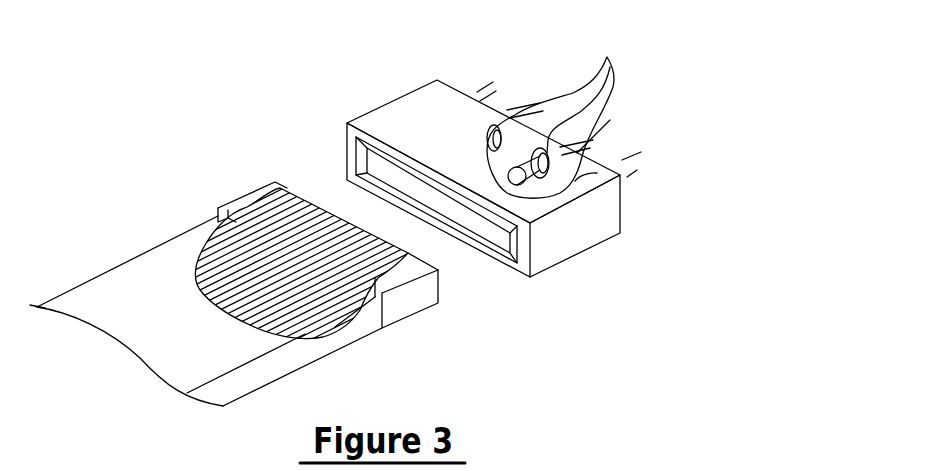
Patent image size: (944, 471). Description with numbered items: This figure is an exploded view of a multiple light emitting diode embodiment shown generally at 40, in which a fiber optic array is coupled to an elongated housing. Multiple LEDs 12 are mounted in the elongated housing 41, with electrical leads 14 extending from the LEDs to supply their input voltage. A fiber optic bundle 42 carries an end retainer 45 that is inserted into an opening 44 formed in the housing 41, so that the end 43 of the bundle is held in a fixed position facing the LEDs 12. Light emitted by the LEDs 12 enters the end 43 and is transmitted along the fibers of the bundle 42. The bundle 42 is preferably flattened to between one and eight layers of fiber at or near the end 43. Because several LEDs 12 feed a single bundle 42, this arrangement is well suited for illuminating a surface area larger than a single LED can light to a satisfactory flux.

The multiple LED embodiment 40 is at (283, 93).
The elongated housing 41 is at (420, 124).
The fiber optic bundle 42 is at (220, 278).
The end of fiber optic bundle 43 is at (307, 200).
The opening 44 is at (380, 164).
The end retainer 45 is at (242, 200).
The electrical lead 14 is at (480, 117).
The light emitting diode 12 is at (607, 58).